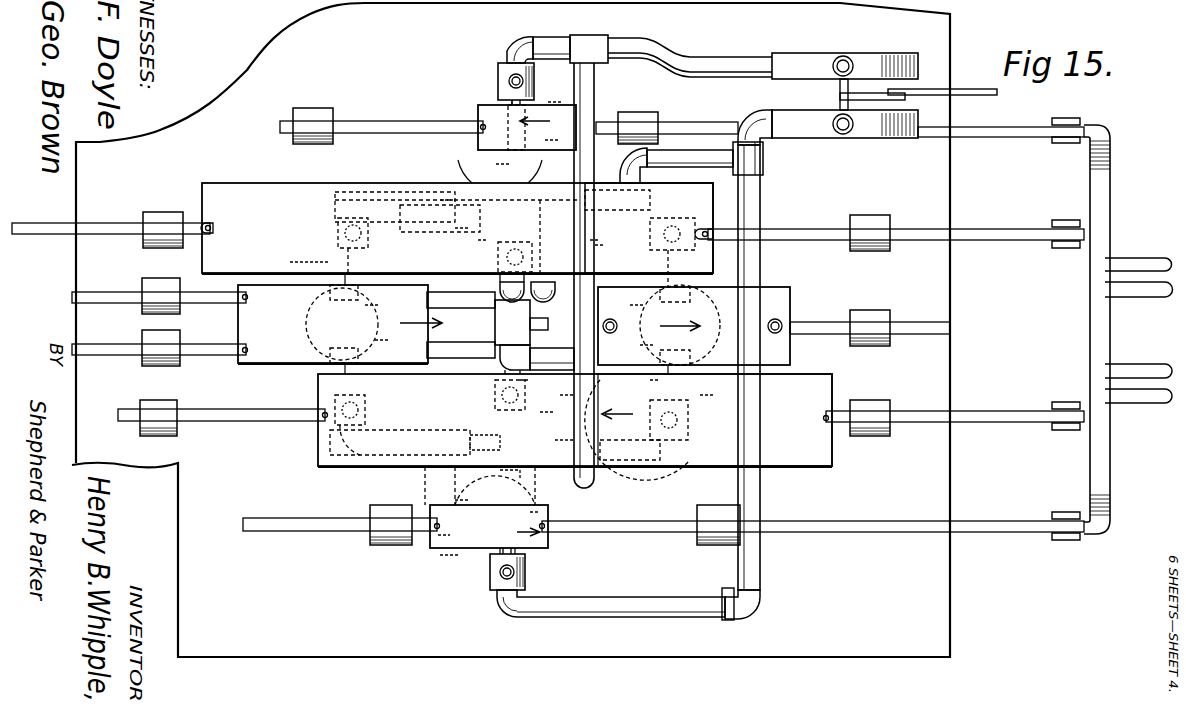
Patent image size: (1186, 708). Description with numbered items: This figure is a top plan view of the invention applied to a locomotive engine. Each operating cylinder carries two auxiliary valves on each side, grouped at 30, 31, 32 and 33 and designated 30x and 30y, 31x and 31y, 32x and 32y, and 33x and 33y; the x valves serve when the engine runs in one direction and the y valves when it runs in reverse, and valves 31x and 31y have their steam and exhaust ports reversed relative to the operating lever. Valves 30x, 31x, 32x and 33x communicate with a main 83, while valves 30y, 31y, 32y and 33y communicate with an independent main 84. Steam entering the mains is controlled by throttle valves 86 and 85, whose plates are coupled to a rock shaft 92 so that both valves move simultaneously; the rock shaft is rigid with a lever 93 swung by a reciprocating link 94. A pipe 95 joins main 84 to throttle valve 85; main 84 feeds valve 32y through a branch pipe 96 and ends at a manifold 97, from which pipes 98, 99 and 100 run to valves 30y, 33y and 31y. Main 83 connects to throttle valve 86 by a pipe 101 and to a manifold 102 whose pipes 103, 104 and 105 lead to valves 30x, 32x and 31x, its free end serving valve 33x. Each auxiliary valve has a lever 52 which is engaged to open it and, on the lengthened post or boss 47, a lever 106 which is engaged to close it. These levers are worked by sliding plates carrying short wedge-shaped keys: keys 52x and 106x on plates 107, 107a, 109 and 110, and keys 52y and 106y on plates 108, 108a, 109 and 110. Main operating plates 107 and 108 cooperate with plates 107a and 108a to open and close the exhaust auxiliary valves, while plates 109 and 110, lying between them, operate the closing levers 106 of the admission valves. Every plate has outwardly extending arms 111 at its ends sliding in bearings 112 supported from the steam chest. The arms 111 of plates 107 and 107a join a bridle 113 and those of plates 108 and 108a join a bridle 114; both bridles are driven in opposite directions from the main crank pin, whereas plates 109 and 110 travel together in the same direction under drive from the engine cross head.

The valve piston 30 is at (674, 325).
The auxiliary valve 30x is at (650, 224).
The auxiliary valve 30y is at (650, 404).
The valve piston 31 is at (342, 324).
The auxiliary valve 31x is at (337, 230).
The auxiliary valve 31y is at (365, 425).
The valve 32 is at (500, 144).
The auxiliary valve 32x is at (497, 260).
The auxiliary valve 32y is at (497, 79).
The valve 33 is at (458, 478).
The auxiliary valve 33x is at (528, 580).
The auxiliary valve 33y is at (495, 408).
The boss 47 is at (468, 314).
The lever 52 is at (485, 345).
The key 52x is at (430, 365).
The key 52y is at (586, 282).
The main 83 is at (762, 193).
The main 84 is at (596, 91).
The throttle valve 85 is at (803, 54).
The throttle valve 86 is at (845, 116).
The rock shaft 92 is at (833, 94).
The lever 93 is at (905, 100).
The reciprocating link 94 is at (972, 96).
The pipe 95 is at (700, 62).
The branch pipe 96 is at (548, 34).
The manifold 97 is at (440, 468).
The pipe 98 is at (680, 438).
The pipe 99 is at (548, 362).
The pipe 100 is at (400, 442).
The pipe 101 is at (750, 105).
The manifold 102 is at (437, 218).
The pipe 103 is at (690, 212).
The pipe 104 is at (559, 236).
The pipe 105 is at (338, 218).
The lever 106 is at (493, 323).
The key 106x is at (508, 382).
The key 106y is at (518, 256).
The main operating plate 107 is at (457, 228).
The plate 107a is at (489, 526).
The main operating plate 108 is at (575, 420).
The plate 108a is at (527, 127).
The plate 109 is at (694, 326).
The plate 110 is at (340, 324).
The arm 111 is at (347, 134).
The bearing 112 is at (300, 108).
The bridle 113 is at (1089, 331).
The bridle 114 is at (1110, 175).